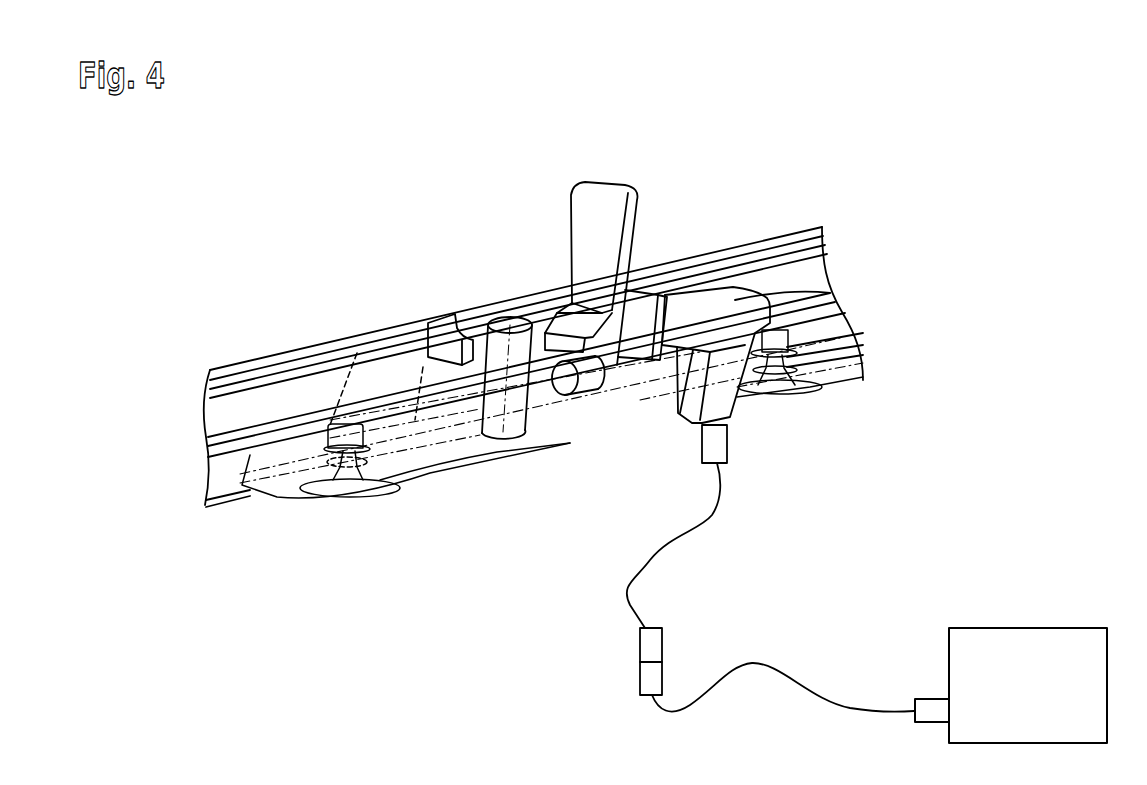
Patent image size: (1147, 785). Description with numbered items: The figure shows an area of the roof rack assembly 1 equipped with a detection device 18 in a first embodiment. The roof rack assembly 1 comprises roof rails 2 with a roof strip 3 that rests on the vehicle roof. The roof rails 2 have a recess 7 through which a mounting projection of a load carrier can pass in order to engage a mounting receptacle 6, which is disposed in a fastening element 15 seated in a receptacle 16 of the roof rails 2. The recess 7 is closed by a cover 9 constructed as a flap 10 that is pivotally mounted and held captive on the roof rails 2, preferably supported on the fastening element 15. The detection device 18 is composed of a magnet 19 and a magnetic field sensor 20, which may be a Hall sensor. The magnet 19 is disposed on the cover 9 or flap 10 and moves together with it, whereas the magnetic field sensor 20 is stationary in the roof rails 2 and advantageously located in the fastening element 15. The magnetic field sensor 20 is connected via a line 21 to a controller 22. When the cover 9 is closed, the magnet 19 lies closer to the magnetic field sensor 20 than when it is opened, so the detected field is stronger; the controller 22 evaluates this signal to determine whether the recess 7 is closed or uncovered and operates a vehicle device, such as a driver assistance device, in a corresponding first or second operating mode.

The roof rack assembly 1 is at (929, 292).
The roof rails 2 is at (862, 219).
The roof strip 3 is at (843, 332).
The mounting receptacle 6 is at (515, 407).
The recess 7 is at (475, 325).
The cover 9 is at (606, 230).
The flap 10 is at (603, 190).
The fastening element 15 is at (443, 417).
The receptacle 16 is at (812, 292).
The detection device 18 is at (722, 219).
The magnet 19 is at (582, 390).
The magnetic field sensor 20 is at (677, 345).
The line 21 is at (640, 572).
The controller 22 is at (1028, 633).